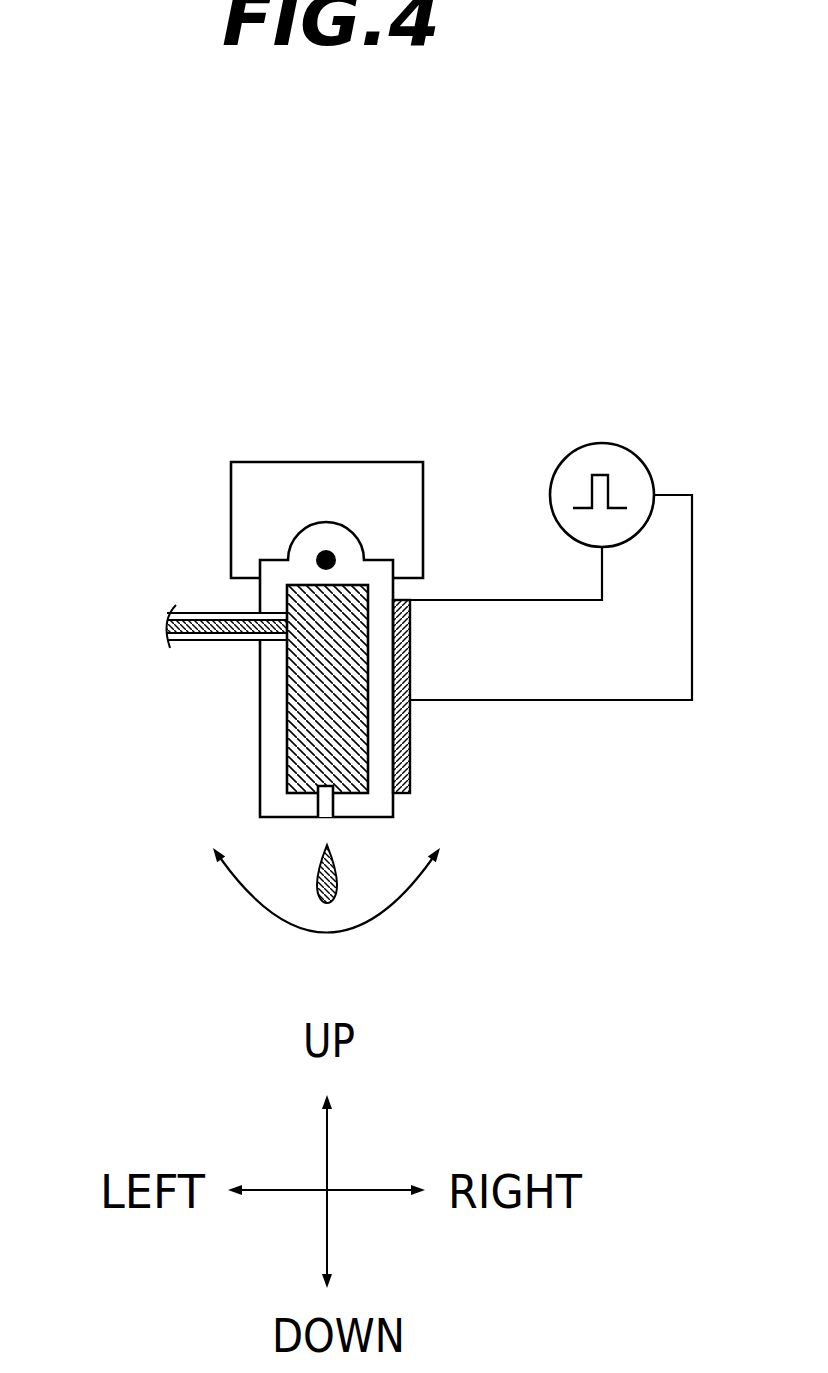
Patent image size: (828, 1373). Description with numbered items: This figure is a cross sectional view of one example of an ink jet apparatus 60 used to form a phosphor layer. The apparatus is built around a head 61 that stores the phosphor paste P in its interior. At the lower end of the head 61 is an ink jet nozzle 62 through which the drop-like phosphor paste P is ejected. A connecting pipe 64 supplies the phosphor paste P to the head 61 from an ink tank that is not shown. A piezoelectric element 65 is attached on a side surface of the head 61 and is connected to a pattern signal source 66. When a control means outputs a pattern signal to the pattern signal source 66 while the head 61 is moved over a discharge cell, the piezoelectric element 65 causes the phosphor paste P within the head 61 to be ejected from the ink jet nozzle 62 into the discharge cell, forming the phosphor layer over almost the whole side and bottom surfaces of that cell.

The ink jet apparatus 60 is at (121, 512).
The head 61 is at (277, 757).
The ink jet nozzle 62 is at (337, 817).
The connecting pipe 64 is at (213, 617).
The piezoelectric element 65 is at (410, 725).
The pattern signal source 66 is at (602, 443).
The phosphor paste P is at (288, 658).